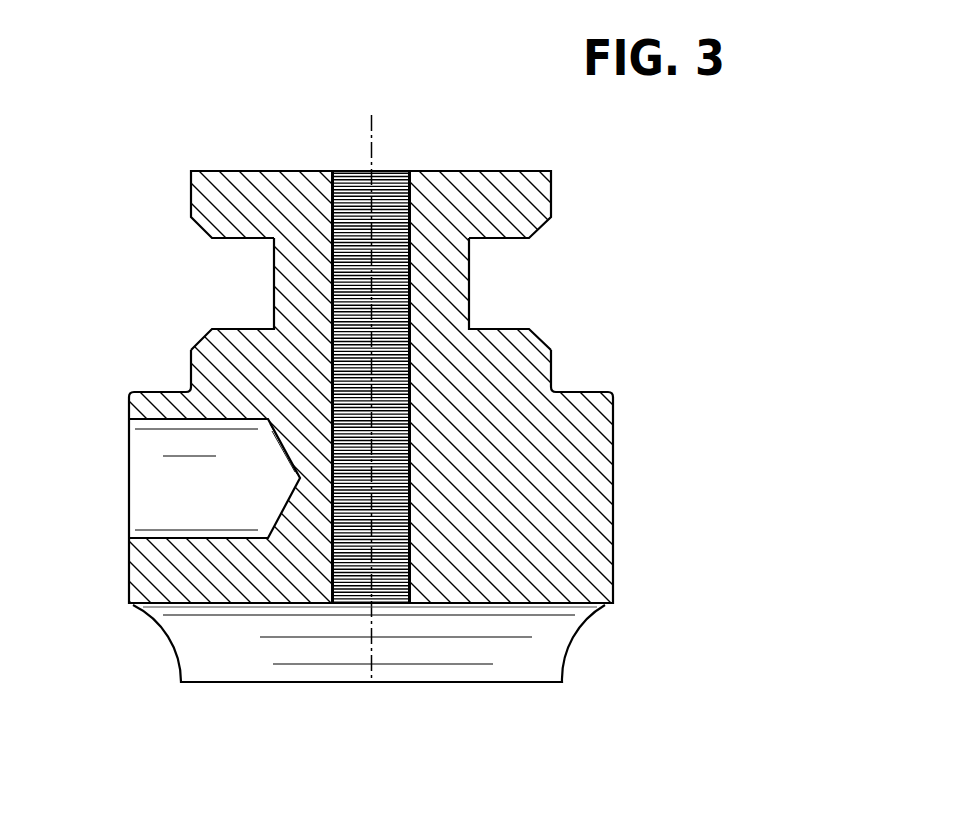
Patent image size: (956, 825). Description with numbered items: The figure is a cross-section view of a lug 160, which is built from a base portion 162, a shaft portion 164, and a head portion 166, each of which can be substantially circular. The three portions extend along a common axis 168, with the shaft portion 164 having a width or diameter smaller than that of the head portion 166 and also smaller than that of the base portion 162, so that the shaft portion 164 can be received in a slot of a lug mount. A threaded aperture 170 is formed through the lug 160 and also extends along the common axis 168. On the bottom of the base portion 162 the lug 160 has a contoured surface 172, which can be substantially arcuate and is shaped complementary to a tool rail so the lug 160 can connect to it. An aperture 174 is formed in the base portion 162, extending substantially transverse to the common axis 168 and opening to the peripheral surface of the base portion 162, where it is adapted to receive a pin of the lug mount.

The lug 160 is at (150, 210).
The base portion 162 is at (613, 497).
The shaft portion 164 is at (469, 290).
The head portion 166 is at (551, 203).
The common axis 168 is at (372, 132).
The threaded aperture 170 is at (405, 575).
The contoured surface 172 is at (540, 662).
The aperture 174 is at (176, 480).